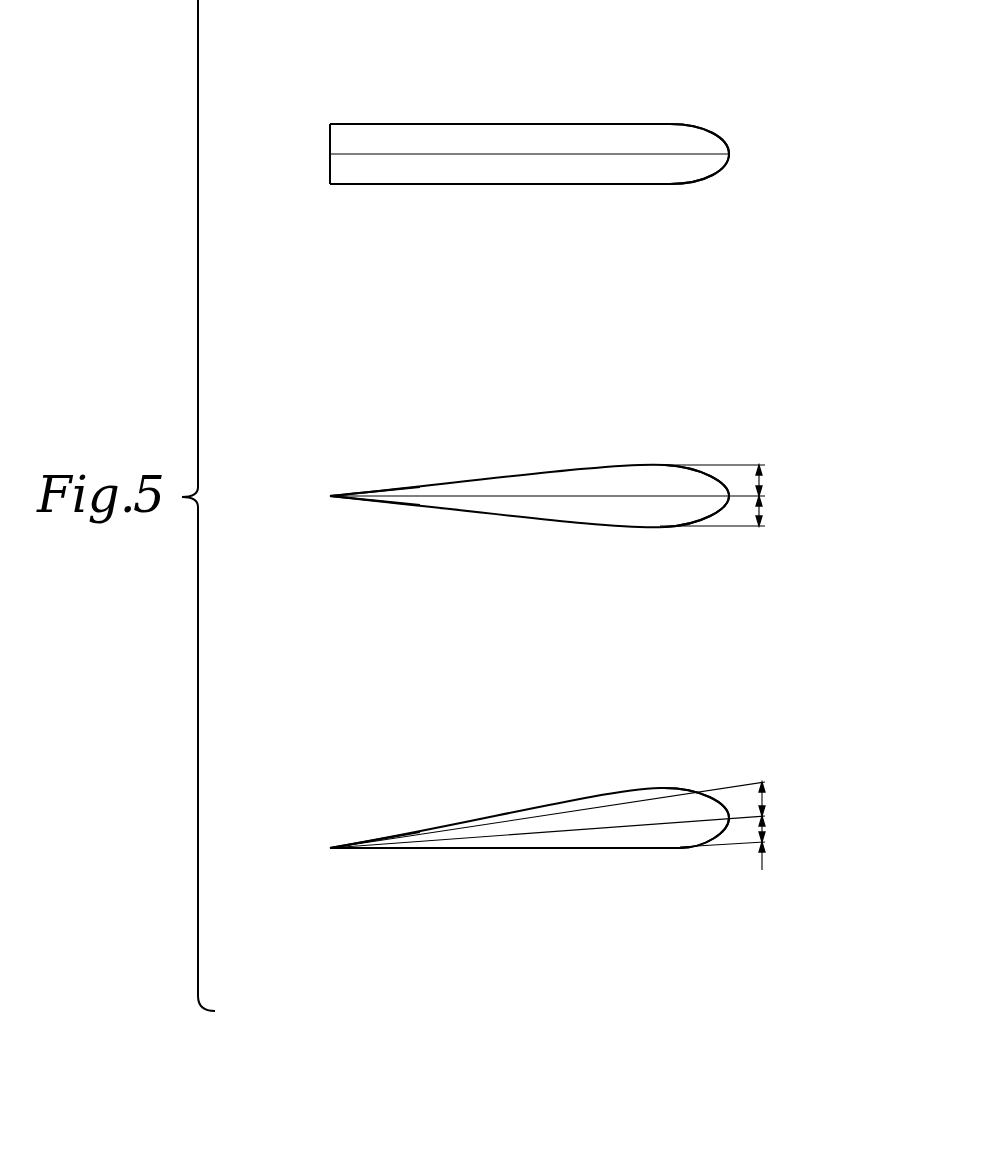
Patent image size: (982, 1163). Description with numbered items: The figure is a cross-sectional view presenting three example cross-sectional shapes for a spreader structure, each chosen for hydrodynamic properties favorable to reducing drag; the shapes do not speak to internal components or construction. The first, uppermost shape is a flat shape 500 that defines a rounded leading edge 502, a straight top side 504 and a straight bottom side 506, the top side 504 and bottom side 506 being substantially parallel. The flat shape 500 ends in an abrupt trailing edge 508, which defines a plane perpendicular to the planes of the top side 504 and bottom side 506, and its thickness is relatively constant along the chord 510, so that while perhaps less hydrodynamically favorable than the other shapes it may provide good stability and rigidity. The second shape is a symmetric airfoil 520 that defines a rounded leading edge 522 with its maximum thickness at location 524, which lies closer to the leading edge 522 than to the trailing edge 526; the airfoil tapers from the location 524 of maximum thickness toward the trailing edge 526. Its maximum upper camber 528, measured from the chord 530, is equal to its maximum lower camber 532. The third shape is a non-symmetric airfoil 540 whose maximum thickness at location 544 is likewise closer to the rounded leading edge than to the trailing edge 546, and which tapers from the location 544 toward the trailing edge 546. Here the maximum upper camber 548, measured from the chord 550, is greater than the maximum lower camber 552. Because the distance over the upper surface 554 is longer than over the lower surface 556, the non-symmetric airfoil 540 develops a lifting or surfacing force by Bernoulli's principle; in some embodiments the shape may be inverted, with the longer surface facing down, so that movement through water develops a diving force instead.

The flat shape 500 is at (498, 128).
The rounded leading edge 502 is at (741, 93).
The straight top side 504 is at (513, 124).
The straight bottom side 506 is at (515, 185).
The abrupt trailing edge 508 is at (330, 144).
The chord 510 is at (401, 154).
The symmetric airfoil 520 is at (531, 487).
The rounded leading edge 522 is at (741, 433).
The location of maximum thickness 524 is at (650, 560).
The trailing edge 526 is at (305, 470).
The maximum upper camber 528 is at (762, 481).
The chord 530 is at (530, 496).
The maximum lower camber 532 is at (762, 511).
The non-symmetric airfoil 540 is at (531, 810).
The location of maximum thickness 544 is at (651, 885).
The trailing edge 546 is at (307, 822).
The maximum upper camber 548 is at (765, 801).
The chord 550 is at (532, 833).
The maximum lower camber 552 is at (765, 830).
The upper surface 554 is at (472, 822).
The lower surface 556 is at (497, 849).